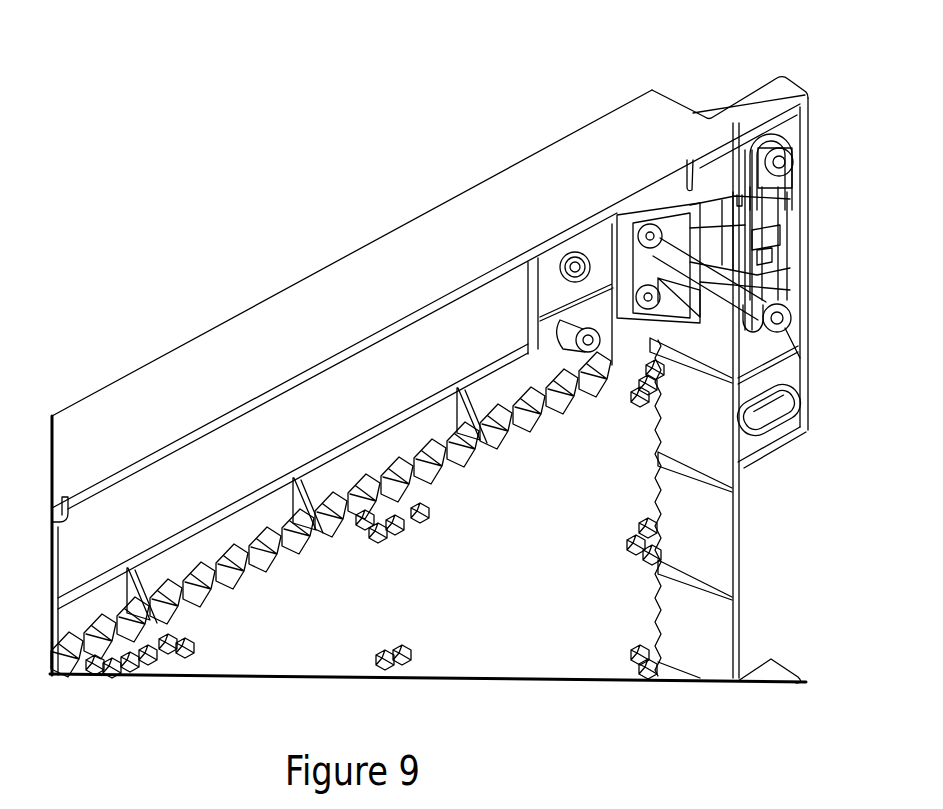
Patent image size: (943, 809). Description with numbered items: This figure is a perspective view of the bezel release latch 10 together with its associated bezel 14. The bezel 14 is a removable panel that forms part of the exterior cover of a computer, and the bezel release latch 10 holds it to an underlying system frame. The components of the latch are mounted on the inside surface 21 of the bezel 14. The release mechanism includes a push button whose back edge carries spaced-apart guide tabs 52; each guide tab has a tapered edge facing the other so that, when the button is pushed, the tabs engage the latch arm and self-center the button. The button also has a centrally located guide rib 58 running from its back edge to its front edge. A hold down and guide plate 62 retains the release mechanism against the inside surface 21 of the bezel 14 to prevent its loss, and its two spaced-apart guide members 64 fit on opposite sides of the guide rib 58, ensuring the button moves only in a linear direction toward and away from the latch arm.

The bezel release latch 10 is at (713, 177).
The bezel 14 is at (283, 278).
The inside surface 21 is at (391, 508).
The guide tabs 52 is at (700, 308).
The guide rib 58 is at (723, 252).
The hold down and guide plate 62 is at (793, 140).
The guide members 64 is at (745, 212).